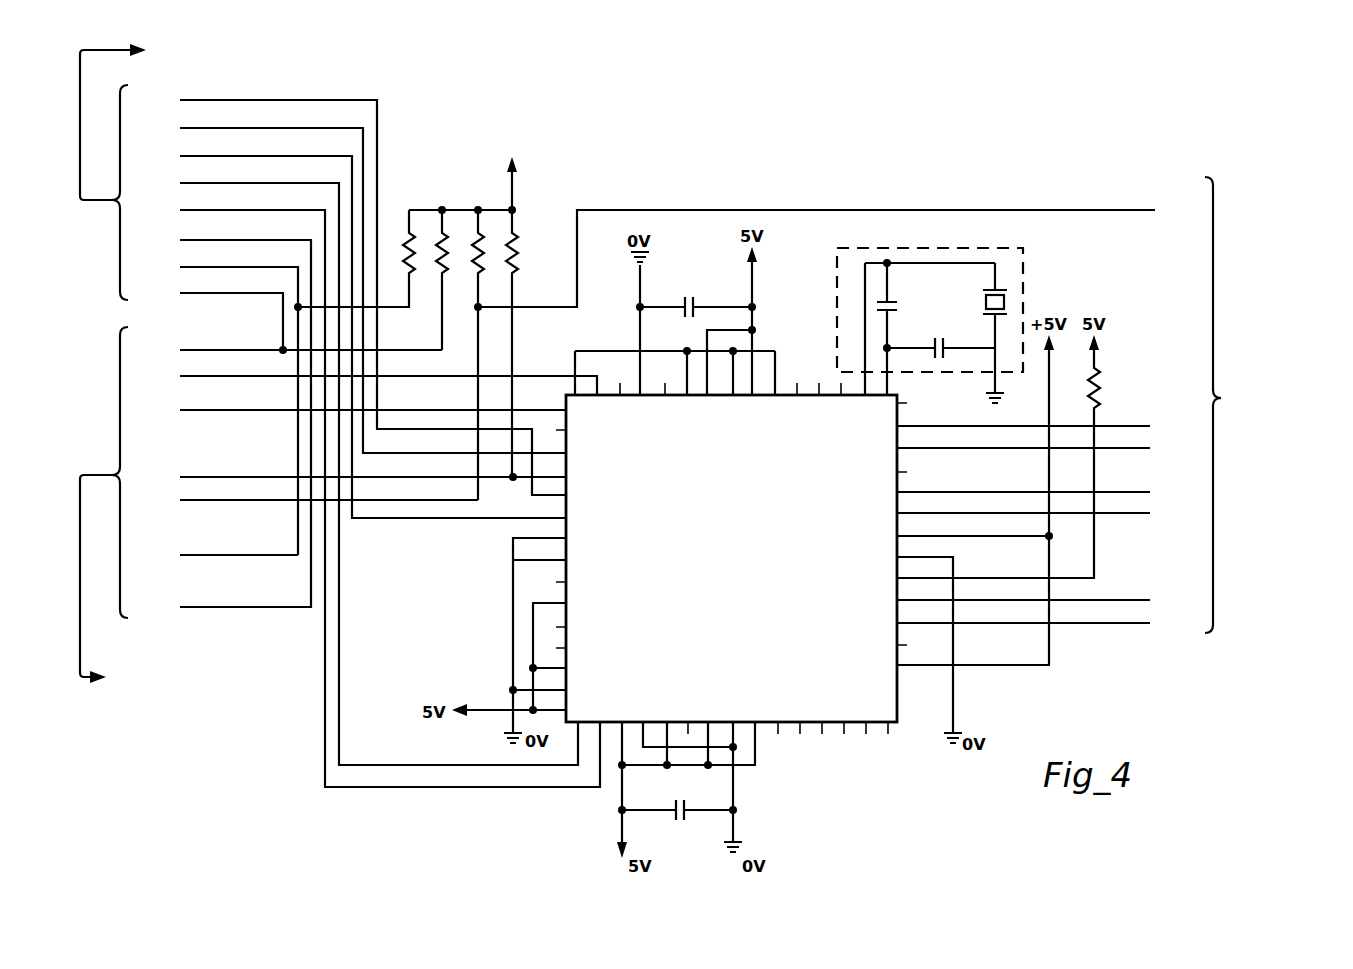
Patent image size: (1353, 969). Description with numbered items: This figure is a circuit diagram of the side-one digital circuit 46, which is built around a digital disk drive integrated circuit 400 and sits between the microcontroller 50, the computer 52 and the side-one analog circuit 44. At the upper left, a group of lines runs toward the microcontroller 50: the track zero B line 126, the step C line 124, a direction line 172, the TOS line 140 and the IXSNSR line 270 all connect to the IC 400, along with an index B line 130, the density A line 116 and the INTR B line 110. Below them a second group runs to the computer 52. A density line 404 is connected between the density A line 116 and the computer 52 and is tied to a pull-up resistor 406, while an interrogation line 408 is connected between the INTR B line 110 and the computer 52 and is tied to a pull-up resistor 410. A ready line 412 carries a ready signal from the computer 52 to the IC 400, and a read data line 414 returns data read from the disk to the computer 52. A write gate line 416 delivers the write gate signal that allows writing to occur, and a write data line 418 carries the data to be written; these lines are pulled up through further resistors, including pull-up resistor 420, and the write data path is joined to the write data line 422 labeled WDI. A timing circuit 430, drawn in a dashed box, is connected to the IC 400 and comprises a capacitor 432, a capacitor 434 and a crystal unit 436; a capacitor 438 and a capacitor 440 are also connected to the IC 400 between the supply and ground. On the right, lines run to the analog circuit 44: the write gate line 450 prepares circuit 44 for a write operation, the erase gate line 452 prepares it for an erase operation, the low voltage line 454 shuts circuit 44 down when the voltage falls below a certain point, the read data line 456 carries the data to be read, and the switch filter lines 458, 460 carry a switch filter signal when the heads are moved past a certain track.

The microcontroller 50 is at (297, 171).
The computer 52 is at (182, 508).
The side-one analog circuit 44 is at (1253, 405).
The side-one digital circuit 46 is at (731, 600).
The track zero B line 126 is at (180, 100).
The step C line 124 is at (180, 128).
The dir C signal line 172 is at (180, 156).
The TOS line 140 is at (180, 183).
The IXSNSR line 270 is at (180, 210).
The index B signal line 130 is at (180, 240).
The density A line 116 is at (180, 267).
The INTR B line 110 is at (180, 293).
The interrogation line (INTR) 408 is at (180, 350).
The ready line 412 is at (180, 376).
The read data line (RDDT) 414 is at (180, 410).
The write gate line (WTGT) 416 is at (180, 477).
The write data line (WTDT) 418 is at (180, 500).
The density line 404 is at (180, 555).
The pull-up resistor 406 is at (405, 234).
The pull-up resistor 410 is at (436, 278).
The pull-up resistor 420 is at (474, 234).
The write data line (WDI) 422 is at (836, 246).
The digital disk drive integrated circuit 400 is at (731, 558).
The capacitor 440 is at (690, 306).
The timing circuit 430 is at (1023, 265).
The capacitor 432 is at (897, 307).
The capacitor 434 is at (939, 348).
The crystal unit 436 is at (982, 300).
The capacitor 438 is at (680, 808).
The write gate line (WG1) 450 is at (1150, 426).
The erase gate line (EG1) 452 is at (1150, 448).
The low voltage line (LVS1) 454 is at (1150, 492).
The read data line (RD11) 456 is at (1150, 513).
The switch filter line (SF01) 458 is at (1150, 600).
The switch filter line (SF11) 460 is at (1150, 623).